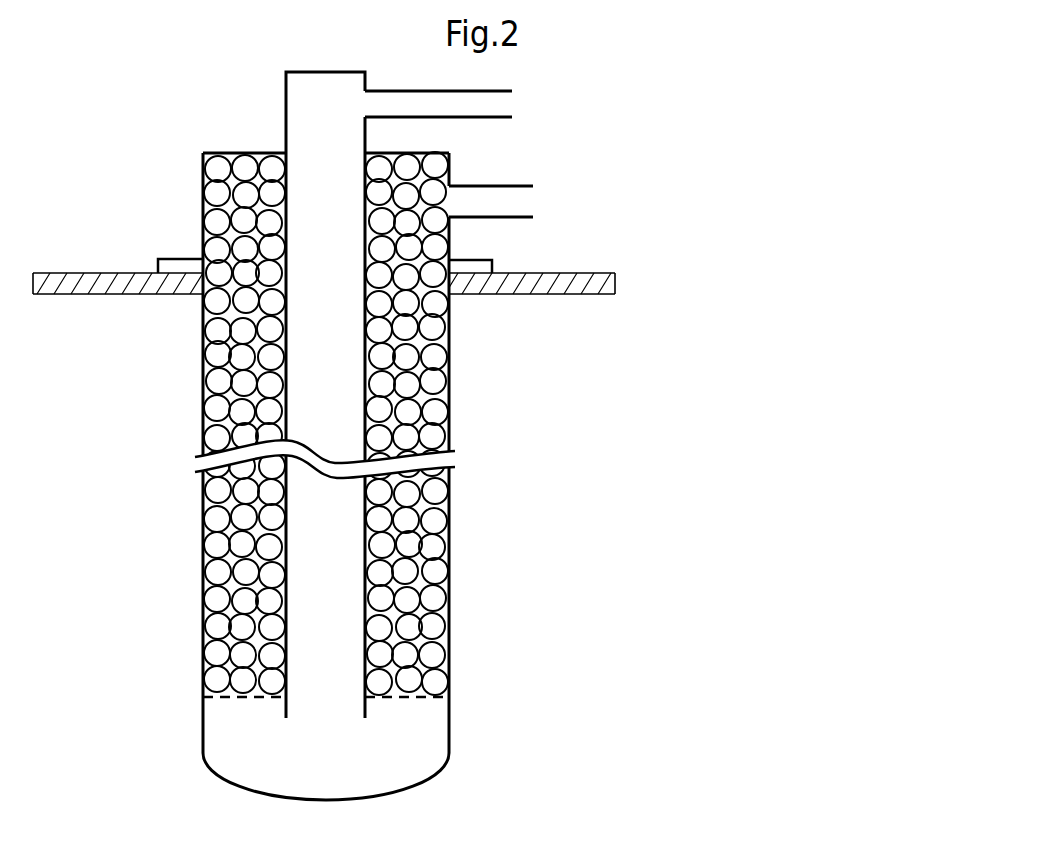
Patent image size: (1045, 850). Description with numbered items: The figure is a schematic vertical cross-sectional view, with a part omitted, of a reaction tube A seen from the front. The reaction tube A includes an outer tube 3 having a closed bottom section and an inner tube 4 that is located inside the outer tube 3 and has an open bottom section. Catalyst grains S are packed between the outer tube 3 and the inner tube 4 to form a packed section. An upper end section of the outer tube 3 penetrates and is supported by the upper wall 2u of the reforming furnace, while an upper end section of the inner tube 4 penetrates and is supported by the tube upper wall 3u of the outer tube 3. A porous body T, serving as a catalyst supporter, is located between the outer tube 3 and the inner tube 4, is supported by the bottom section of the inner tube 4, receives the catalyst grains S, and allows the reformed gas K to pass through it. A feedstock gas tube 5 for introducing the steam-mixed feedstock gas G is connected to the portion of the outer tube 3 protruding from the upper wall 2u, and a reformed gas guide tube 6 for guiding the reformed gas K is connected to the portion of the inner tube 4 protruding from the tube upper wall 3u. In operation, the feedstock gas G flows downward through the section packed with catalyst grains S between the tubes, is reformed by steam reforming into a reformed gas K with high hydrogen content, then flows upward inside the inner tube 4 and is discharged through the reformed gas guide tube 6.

The upper wall 2u is at (97, 273).
The outer tube 3 is at (450, 398).
The tube upper wall 3u is at (247, 152).
The inner tube 4 is at (368, 563).
The feedstock gas tube 5 is at (507, 220).
The reformed gas guide tube 6 is at (465, 118).
The catalyst grains S is at (438, 352).
The porous body T is at (413, 699).
The reaction tube A is at (494, 513).
The reformed gas K is at (487, 103).
The feedstock gas G is at (491, 203).